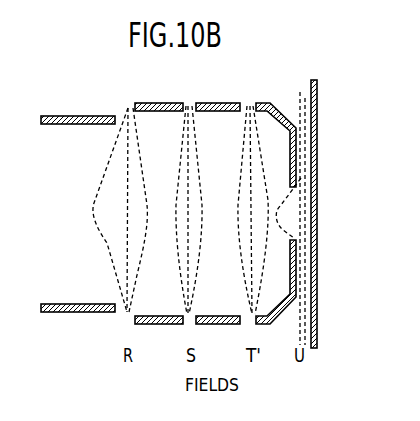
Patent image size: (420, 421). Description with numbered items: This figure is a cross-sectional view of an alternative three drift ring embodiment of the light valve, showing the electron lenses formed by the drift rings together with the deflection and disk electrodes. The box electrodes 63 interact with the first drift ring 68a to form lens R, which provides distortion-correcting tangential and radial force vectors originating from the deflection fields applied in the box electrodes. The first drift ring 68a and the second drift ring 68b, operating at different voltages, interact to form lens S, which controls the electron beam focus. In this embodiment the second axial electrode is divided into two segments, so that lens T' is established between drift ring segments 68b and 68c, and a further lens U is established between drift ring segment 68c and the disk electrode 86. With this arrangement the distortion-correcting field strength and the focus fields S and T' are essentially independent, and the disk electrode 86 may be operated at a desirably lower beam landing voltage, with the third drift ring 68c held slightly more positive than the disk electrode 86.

The box electrodes 63 is at (72, 115).
The first drift ring 68a is at (167, 102).
The second drift ring 68b is at (228, 102).
The third drift ring 68c is at (279, 90).
The disk electrode 86 is at (311, 86).